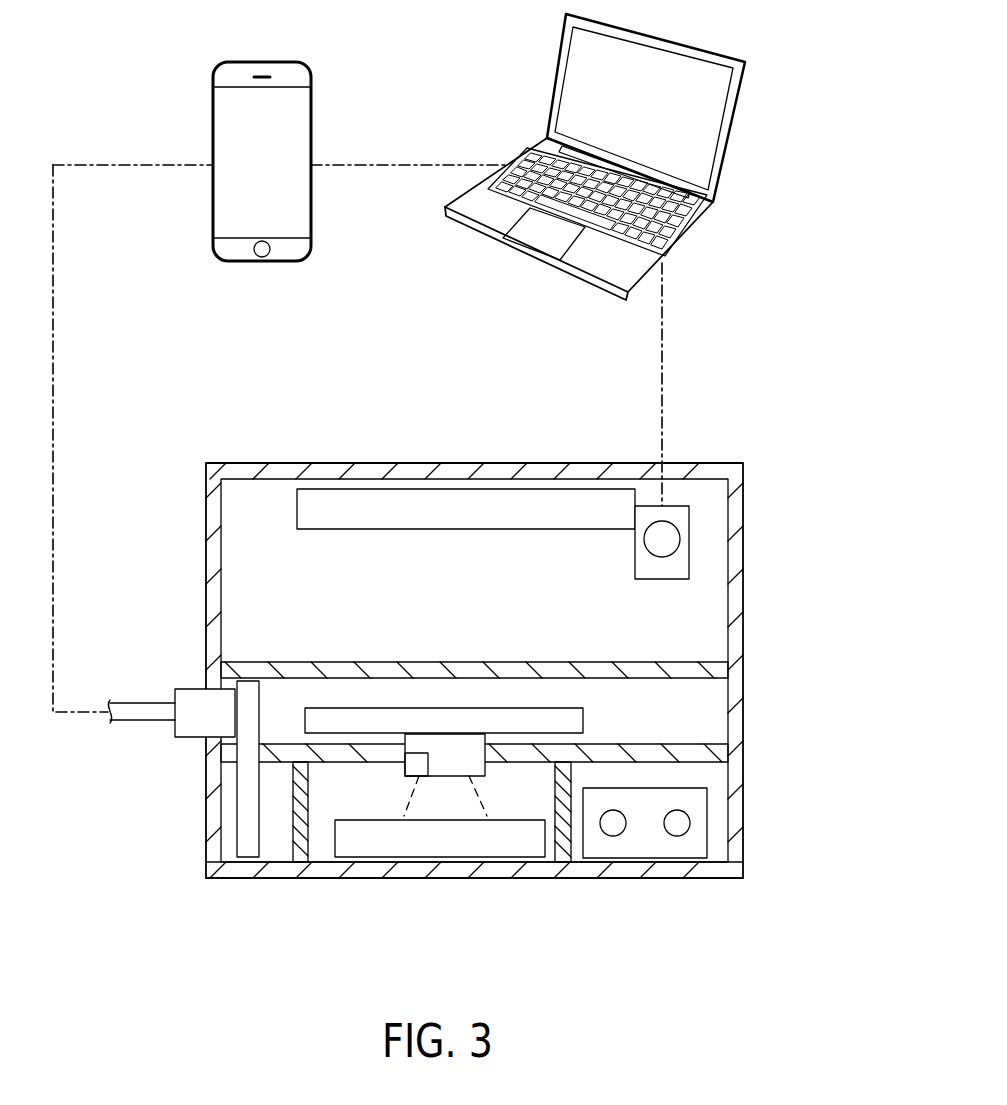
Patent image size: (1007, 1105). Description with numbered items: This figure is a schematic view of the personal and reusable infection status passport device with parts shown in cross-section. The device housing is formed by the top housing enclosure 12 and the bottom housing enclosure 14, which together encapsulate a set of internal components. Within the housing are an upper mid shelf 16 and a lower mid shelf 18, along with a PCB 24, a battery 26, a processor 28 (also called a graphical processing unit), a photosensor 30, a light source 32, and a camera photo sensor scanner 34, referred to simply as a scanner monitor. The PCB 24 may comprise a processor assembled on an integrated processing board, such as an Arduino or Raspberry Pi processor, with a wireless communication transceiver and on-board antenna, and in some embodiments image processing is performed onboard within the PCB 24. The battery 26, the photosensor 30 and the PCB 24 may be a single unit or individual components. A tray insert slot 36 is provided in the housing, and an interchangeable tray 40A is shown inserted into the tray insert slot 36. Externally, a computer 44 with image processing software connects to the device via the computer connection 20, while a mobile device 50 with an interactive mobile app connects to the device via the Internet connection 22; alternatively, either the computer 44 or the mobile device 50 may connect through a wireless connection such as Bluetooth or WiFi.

The top housing enclosure 12 is at (205, 496).
The bottom housing enclosure 14 is at (203, 862).
The upper mid shelf 16 is at (685, 662).
The lower mid shelf 18 is at (712, 745).
The computer connection 20 is at (692, 540).
The Internet connection 22 is at (145, 703).
The PCB 24 is at (240, 810).
The battery 26 is at (637, 848).
The processor 28 is at (297, 508).
The photosensor 30 is at (445, 744).
The light source 32 is at (417, 772).
The camera photo sensor scanner 34 is at (375, 708).
The tray insert slot 36 is at (322, 843).
The interchangeable tray 40A is at (468, 850).
The computer 44 is at (733, 125).
The mobile device 50 is at (311, 106).